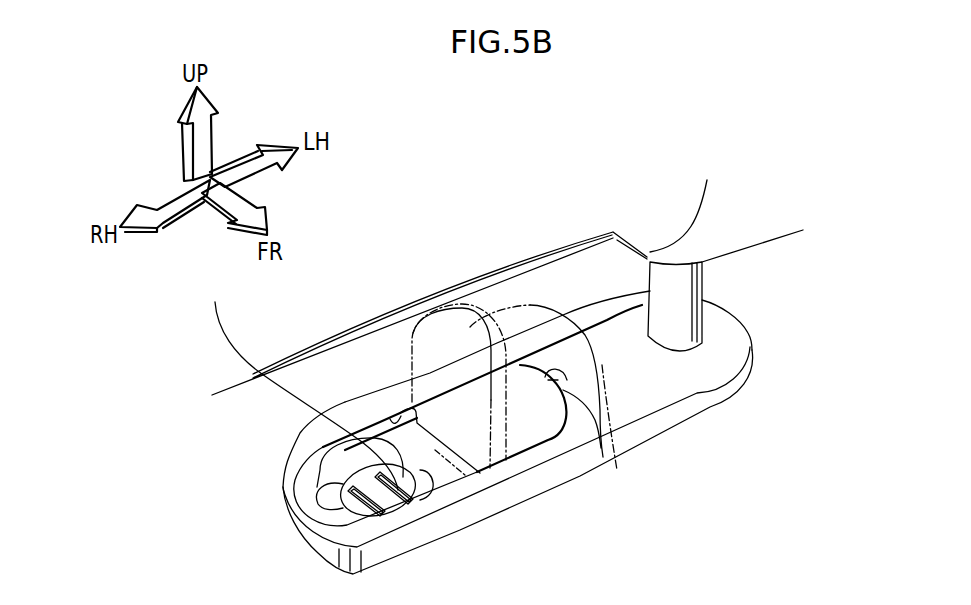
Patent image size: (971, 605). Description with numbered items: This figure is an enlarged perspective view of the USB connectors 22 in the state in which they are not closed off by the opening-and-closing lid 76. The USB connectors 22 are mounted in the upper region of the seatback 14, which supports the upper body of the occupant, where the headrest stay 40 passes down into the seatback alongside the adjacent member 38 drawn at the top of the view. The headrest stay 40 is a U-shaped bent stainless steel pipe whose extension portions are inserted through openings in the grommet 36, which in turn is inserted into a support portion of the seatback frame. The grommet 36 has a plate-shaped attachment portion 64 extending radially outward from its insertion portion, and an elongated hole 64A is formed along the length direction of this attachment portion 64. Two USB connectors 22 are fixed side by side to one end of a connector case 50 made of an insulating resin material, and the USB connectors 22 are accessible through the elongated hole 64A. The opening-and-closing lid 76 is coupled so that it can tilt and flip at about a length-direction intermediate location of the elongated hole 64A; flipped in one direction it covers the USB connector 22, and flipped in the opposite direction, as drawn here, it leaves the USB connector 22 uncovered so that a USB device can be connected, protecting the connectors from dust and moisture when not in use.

The seatback 14 is at (537, 257).
The USB connectors 22 is at (297, 382).
The grommet 36 is at (753, 363).
The bar 38 is at (787, 239).
The headrest stay 40 is at (703, 287).
The connector case 50 is at (322, 467).
The attachment portion 64 is at (697, 393).
The elongated hole 64A is at (401, 418).
The opening-and-closing lid 76 is at (603, 457).